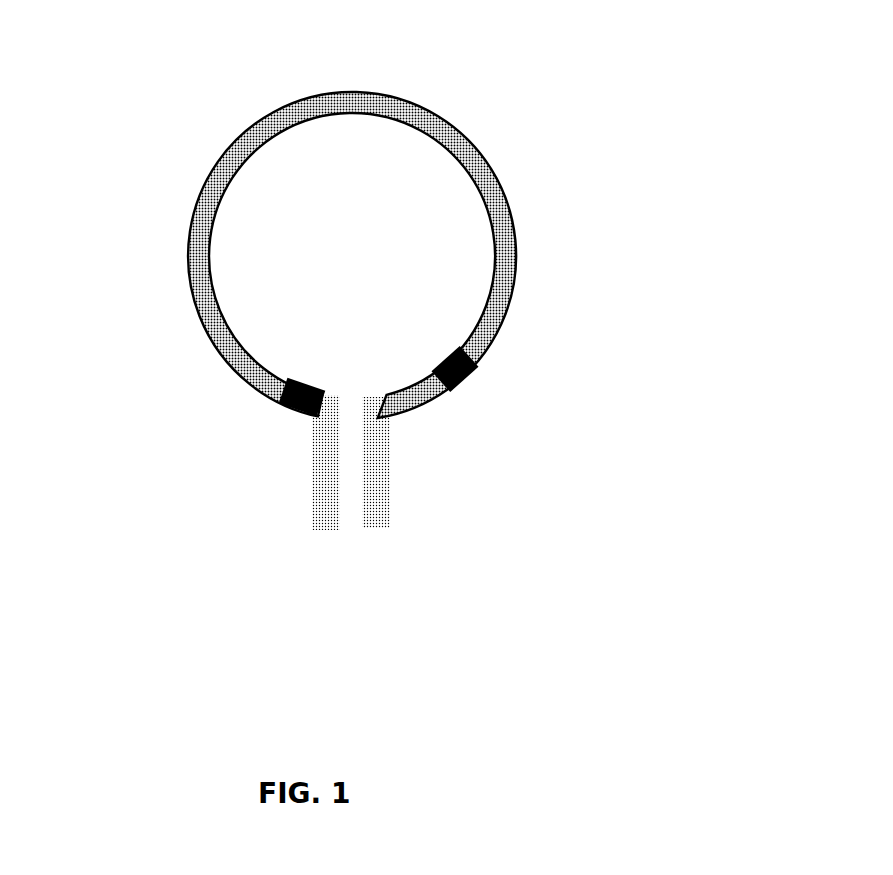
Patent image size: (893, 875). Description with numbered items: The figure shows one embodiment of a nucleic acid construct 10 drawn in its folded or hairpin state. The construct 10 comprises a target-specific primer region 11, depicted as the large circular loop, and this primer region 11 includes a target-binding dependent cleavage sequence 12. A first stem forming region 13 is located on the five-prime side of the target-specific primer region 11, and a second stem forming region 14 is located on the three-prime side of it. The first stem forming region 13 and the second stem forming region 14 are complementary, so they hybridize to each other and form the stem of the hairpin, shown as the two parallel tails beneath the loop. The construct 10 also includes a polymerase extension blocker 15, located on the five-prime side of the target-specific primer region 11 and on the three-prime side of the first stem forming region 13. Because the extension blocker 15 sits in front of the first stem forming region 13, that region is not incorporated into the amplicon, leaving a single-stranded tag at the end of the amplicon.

The nucleic acid construct 10 is at (155, 113).
The target-specific primer region 11 is at (483, 148).
The target-binding dependent cleavage sequence 12 is at (467, 380).
The first stem forming region 13 is at (312, 498).
The second stem forming region 14 is at (393, 485).
The polymerase extension blocker 15 is at (295, 415).